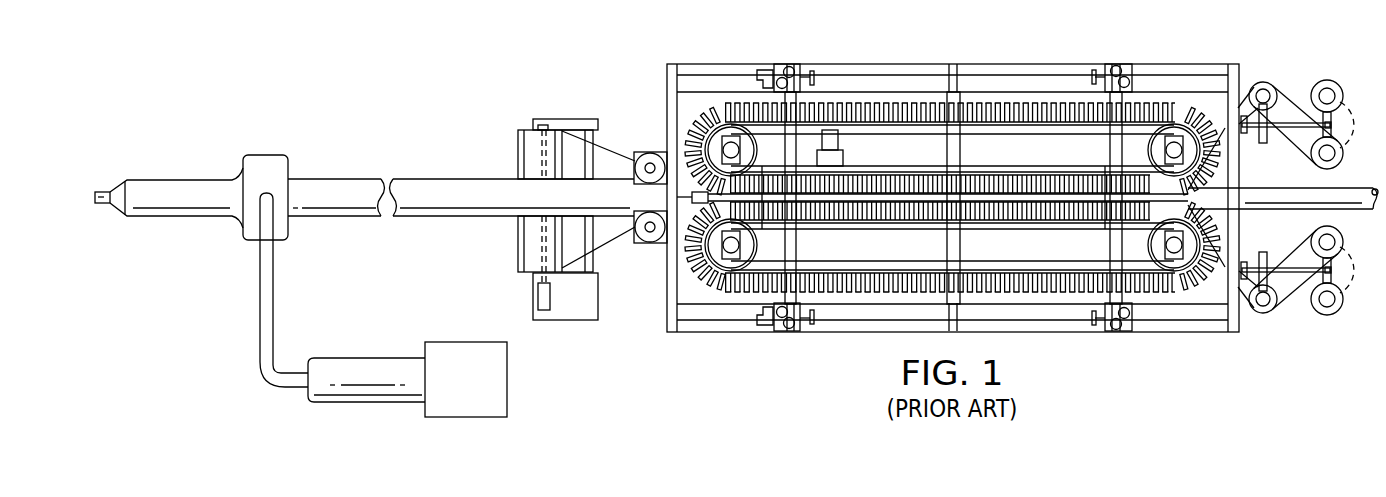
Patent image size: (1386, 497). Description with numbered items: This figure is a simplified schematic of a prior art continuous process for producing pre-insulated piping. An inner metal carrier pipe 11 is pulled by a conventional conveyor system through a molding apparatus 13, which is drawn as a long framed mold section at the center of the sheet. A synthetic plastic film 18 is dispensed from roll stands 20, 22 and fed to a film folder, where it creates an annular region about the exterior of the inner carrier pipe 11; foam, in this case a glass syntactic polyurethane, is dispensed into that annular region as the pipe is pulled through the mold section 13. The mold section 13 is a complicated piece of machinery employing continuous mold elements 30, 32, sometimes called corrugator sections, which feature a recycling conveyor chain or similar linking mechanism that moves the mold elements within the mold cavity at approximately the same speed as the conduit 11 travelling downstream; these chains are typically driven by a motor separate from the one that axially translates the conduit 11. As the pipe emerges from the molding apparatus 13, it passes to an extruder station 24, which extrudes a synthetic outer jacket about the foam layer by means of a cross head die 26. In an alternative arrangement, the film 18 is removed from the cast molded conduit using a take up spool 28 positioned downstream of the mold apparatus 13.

The inner metal carrier pipe 11 is at (1358, 188).
The molding apparatus 13 is at (740, 365).
The synthetic plastic film 18 is at (1290, 83).
The roll stand 20 is at (1333, 80).
The roll stand 22 is at (1328, 316).
The extruder station 24 is at (370, 402).
The cross head die 26 is at (265, 155).
The take up spool 28 is at (480, 132).
The continuous mold element 30 is at (1072, 100).
The continuous mold element 32 is at (1072, 295).